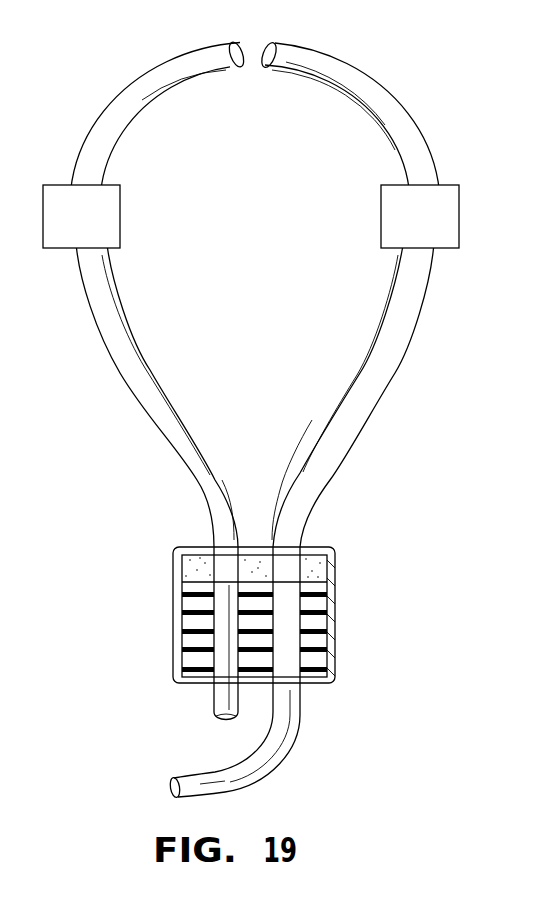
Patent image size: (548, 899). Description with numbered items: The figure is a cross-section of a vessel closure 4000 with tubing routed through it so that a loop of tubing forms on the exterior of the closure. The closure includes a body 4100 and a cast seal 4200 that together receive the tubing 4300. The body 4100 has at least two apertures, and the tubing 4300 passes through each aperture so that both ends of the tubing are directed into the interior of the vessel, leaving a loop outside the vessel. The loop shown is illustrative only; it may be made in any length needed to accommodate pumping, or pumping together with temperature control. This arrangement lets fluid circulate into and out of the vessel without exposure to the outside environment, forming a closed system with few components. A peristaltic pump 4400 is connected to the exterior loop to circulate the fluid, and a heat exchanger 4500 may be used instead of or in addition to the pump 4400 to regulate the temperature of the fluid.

The vessel closure 4000 is at (144, 42).
The body 4100 is at (333, 550).
The cast seal 4200 is at (174, 567).
The tubing 4300 is at (348, 433).
The peristaltic pump 4400 is at (381, 218).
The heat exchanger 4500 is at (120, 218).